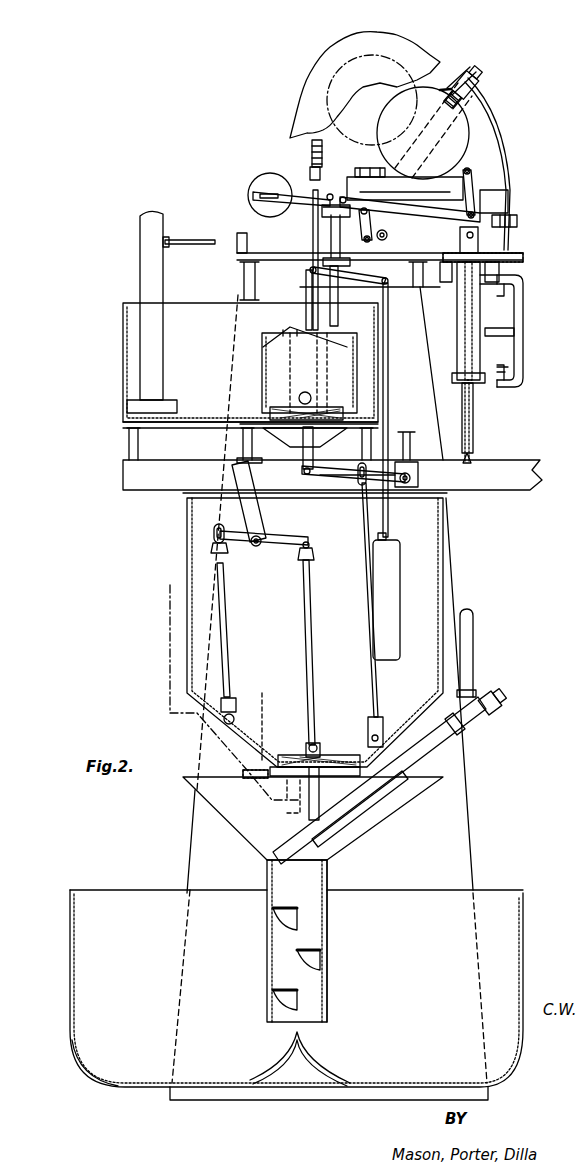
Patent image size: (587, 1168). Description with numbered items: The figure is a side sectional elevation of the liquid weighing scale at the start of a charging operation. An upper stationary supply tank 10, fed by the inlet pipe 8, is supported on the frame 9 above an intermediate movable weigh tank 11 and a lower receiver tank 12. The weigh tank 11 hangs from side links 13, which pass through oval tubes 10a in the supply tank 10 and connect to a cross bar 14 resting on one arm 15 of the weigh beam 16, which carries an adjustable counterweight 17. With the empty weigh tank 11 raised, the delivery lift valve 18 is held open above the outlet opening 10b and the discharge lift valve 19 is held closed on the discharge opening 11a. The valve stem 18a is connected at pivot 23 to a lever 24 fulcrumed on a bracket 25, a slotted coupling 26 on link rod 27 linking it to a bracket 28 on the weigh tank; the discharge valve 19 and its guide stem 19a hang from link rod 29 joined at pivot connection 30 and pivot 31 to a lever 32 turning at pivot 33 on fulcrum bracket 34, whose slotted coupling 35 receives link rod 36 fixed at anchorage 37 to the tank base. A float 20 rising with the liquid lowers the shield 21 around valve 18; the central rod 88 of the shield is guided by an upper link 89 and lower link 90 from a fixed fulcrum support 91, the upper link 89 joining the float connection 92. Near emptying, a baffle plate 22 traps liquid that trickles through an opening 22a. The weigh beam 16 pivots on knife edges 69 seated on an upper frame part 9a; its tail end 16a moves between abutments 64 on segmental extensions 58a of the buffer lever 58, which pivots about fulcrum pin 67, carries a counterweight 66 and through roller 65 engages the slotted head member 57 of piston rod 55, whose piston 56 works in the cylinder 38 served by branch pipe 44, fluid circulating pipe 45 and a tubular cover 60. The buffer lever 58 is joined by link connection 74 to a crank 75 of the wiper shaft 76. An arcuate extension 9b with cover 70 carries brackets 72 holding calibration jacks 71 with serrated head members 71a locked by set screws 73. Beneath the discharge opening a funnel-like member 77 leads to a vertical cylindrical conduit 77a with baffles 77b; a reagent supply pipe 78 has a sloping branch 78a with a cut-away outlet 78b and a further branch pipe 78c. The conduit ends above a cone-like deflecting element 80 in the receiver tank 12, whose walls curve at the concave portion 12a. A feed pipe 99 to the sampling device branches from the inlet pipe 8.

The inlet pipe 8 is at (143, 280).
The frame 9 is at (131, 478).
The upper frame part 9a is at (240, 234).
The arcuate extension 9b is at (495, 120).
The supply tank 10 is at (123, 363).
The oval tubes 10a is at (300, 317).
The outlet opening 10b is at (343, 423).
The weigh tank 11 is at (186, 514).
The discharge opening 11a is at (290, 780).
The receiver tank 12 is at (70, 958).
The concavely curved wall portion 12a is at (108, 1076).
The side links 13 is at (312, 238).
The cross bar 14 is at (311, 150).
The arm of weigh beam 15 is at (310, 168).
The weigh beam 16 is at (428, 195).
The tail end of weigh beam 16a is at (506, 198).
The adjustable counterweight 17 is at (372, 57).
The delivery lift valve 18 is at (273, 410).
The valve stem 18a is at (262, 447).
The discharge lift valve 19 is at (283, 756).
The guide stem 19a is at (310, 813).
The float 20 is at (392, 594).
The shield 21 is at (262, 368).
The baffle plate 22 is at (266, 697).
The opening in baffle plate 22a is at (243, 770).
The pivot 23 is at (309, 478).
The lever 24 is at (338, 480).
The fulcrum bracket 25 is at (420, 487).
The slotted coupling 26 is at (362, 486).
The link rod 27 is at (374, 683).
The bracket 28 is at (368, 743).
The link rod 29 is at (303, 598).
The pivot connection 30 is at (312, 745).
The pivot 31 is at (309, 544).
The lever 32 is at (280, 541).
The pivot 33 is at (253, 544).
The fulcrum bracket 34 is at (247, 508).
The slotted coupling 35 is at (213, 537).
The link rod 36 is at (222, 607).
The pivotal anchorage 37 is at (226, 717).
The cylinder 38 is at (457, 327).
The branch pipe 44 is at (500, 335).
The fluid circulating pipe 45 is at (515, 364).
The piston rod 55 is at (480, 318).
The piston 56 is at (457, 367).
The slotted head member 57 is at (520, 258).
The buffer lever 58 is at (428, 212).
The segmental extensions 58a is at (475, 181).
The tubular cover 60 is at (472, 420).
The abutments 64 is at (471, 170).
The roller 65 is at (482, 237).
The adjustable counterweight 66 is at (258, 184).
The fulcrum pin 67 is at (327, 195).
The knife edges 69 is at (343, 196).
The cover 70 is at (335, 45).
The calibration jack 71 is at (455, 80).
The cylindrical head member 71a is at (458, 118).
The brackets 72 is at (448, 88).
The set screws 73 is at (478, 86).
The link connection 74 is at (361, 226).
The crank 75 is at (370, 243).
The wiper shaft 76 is at (384, 241).
The funnel-like member 77 is at (373, 822).
The vertical cylindrical conduit 77a is at (328, 998).
The baffles 77b is at (302, 960).
The supply pipe 78 is at (470, 625).
The sloping branch 78a is at (427, 750).
The cut-away outlet 78b is at (320, 838).
The further branch pipe 78c is at (500, 705).
The cone-like deflecting element 80 is at (313, 1070).
The central rod 88 is at (306, 285).
The upper link 89 is at (338, 290).
The lower link 90 is at (323, 330).
The fixed fulcrum support 91 is at (311, 270).
The float connection 92 is at (388, 324).
The feed pipe 99 is at (186, 246).